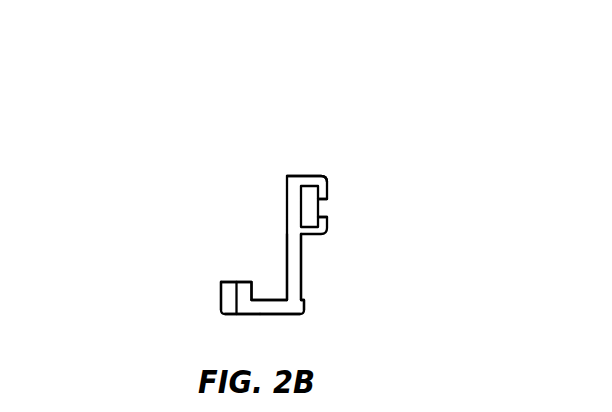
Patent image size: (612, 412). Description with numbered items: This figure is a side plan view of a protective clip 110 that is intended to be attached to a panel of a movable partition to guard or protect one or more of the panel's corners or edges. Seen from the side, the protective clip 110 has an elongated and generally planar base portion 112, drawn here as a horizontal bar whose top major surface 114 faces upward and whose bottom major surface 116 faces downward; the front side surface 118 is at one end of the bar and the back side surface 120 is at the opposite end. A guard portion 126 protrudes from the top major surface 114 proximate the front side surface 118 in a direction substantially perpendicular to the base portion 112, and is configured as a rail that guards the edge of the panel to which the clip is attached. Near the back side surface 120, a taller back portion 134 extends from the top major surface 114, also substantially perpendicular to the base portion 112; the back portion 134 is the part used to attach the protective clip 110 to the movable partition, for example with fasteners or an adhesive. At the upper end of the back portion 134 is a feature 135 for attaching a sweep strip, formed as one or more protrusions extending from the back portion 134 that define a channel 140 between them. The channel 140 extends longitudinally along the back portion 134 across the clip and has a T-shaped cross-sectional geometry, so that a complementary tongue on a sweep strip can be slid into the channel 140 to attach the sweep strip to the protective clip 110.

The protective clip 110 is at (177, 98).
The base portion 112 is at (277, 315).
The top major surface 114 is at (272, 299).
The bottom major surface 116 is at (245, 315).
The front side surface 118 is at (221, 307).
The back side surface 120 is at (304, 303).
The guard portion 126 is at (221, 282).
The back portion 134 is at (287, 232).
The feature 135 is at (302, 177).
The channel 140 is at (302, 208).